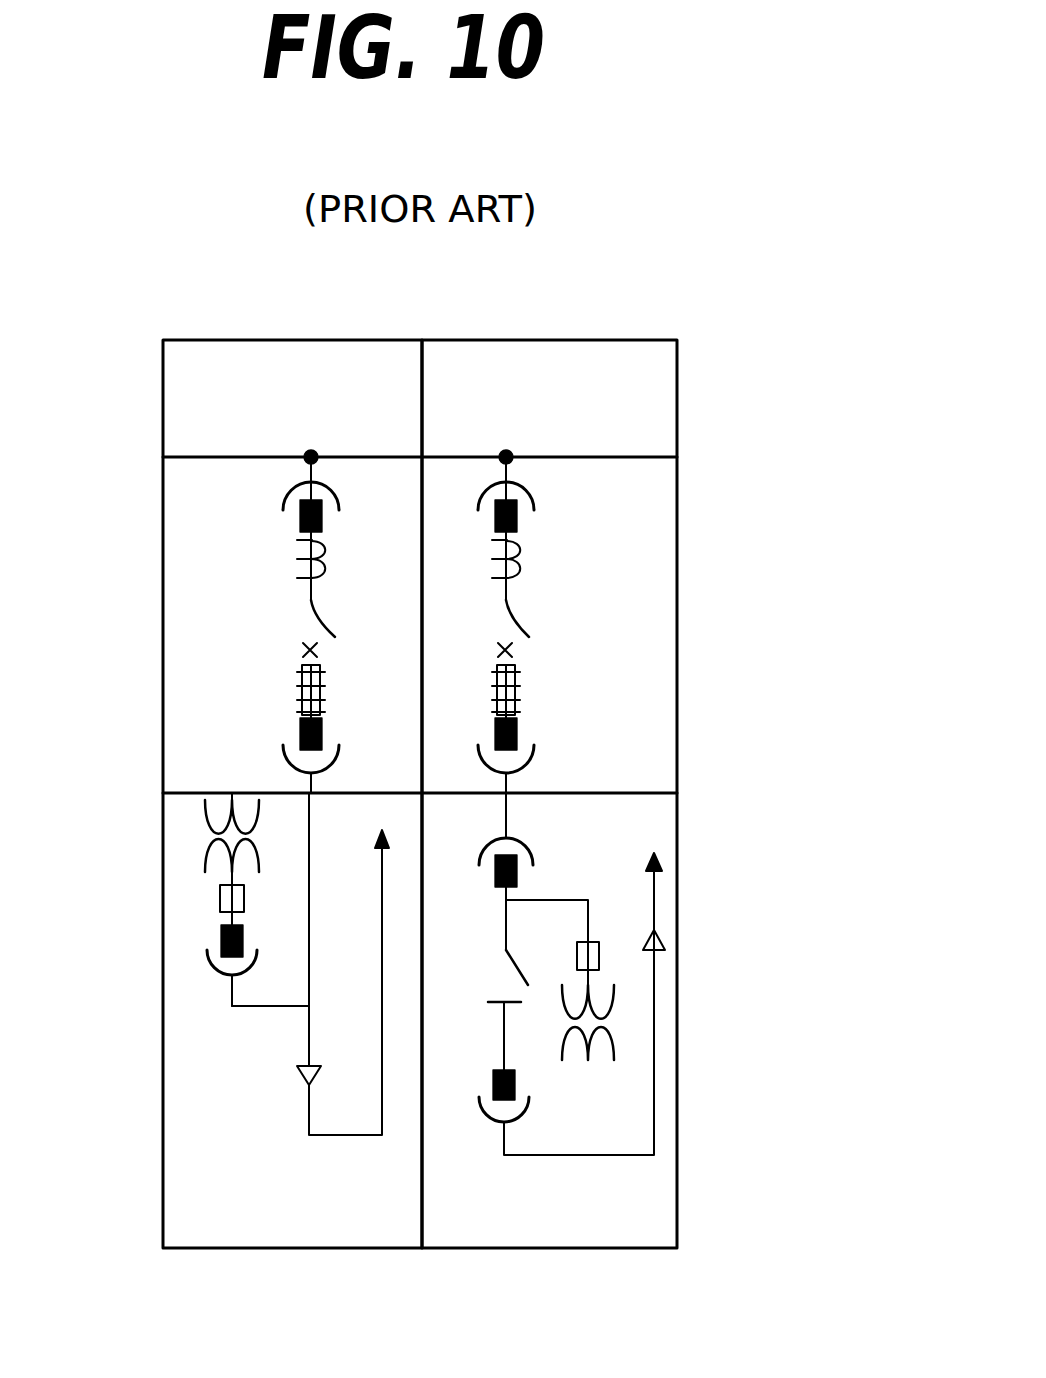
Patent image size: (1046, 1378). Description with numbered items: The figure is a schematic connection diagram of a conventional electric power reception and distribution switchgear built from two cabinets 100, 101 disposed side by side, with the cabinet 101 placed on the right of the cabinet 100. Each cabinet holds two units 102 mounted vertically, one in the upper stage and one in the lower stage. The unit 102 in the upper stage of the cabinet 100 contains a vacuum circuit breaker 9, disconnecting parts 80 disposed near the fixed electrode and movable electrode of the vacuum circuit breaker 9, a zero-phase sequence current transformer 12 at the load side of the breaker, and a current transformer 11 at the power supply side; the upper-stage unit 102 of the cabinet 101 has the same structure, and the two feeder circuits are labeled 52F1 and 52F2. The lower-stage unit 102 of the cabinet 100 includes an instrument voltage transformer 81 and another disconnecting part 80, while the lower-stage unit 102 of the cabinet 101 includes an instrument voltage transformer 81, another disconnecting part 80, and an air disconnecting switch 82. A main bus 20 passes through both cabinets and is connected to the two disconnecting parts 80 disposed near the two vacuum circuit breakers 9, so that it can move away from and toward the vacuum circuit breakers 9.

The cabinet 100 is at (238, 340).
The cabinet 101 is at (610, 340).
The main bus 20 is at (633, 460).
The unit 102 is at (190, 765).
The disconnecting part 80 is at (297, 517).
The current transformer 11 is at (292, 560).
The vacuum circuit breaker 9 is at (523, 618).
The zero-phase sequence current transformer 12 is at (320, 683).
The first feeder circuit 52F1 is at (226, 678).
The second feeder circuit 52F2 is at (597, 666).
The instrument voltage transformer 81 is at (205, 836).
The air disconnecting switch 82 is at (517, 972).